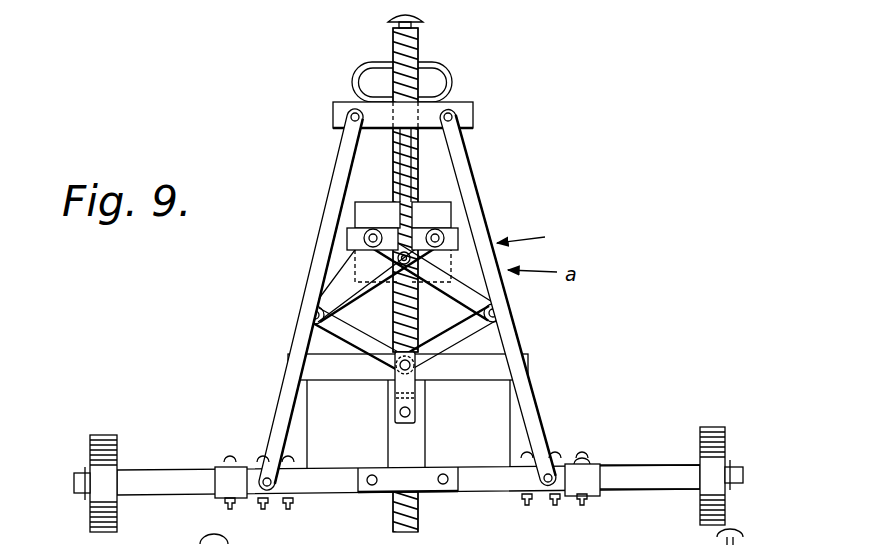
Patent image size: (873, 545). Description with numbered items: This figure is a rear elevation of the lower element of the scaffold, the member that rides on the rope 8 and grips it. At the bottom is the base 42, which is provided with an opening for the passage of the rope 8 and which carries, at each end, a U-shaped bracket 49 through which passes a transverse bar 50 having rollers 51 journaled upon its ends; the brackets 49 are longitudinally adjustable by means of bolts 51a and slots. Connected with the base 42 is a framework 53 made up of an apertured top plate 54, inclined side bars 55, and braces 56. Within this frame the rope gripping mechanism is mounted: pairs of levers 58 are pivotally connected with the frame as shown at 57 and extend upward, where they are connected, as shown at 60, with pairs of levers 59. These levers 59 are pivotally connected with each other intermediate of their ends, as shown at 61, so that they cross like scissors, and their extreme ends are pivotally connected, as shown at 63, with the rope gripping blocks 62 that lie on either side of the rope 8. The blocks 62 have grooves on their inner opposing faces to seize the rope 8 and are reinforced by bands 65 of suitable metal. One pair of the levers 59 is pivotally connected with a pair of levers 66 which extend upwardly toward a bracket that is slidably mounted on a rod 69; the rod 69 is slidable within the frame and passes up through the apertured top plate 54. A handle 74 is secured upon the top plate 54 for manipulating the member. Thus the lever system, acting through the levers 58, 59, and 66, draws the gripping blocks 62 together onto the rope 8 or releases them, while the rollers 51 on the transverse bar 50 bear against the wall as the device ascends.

The rope 8 is at (413, 517).
The base 42 is at (340, 478).
The U-shaped bracket 49 is at (228, 478).
The transverse bar 50 is at (648, 478).
The roller 51 is at (103, 447).
The bolt 51a is at (583, 463).
The framework 53 is at (534, 237).
The apertured top plate 54 is at (467, 112).
The side bar 55 is at (334, 164).
The brace 56 is at (345, 372).
The pivotal connection 57 is at (420, 378).
The lever 58 is at (362, 343).
The lever 59 is at (335, 293).
The pivotal connection 60 is at (310, 313).
The pivotal connection 61 is at (395, 258).
The rope gripping block 62 is at (403, 242).
The pivotal connection 63 is at (352, 242).
The band 65 is at (347, 240).
The lever 66 is at (390, 200).
The rod 69 is at (396, 26).
The handle 74 is at (451, 70).